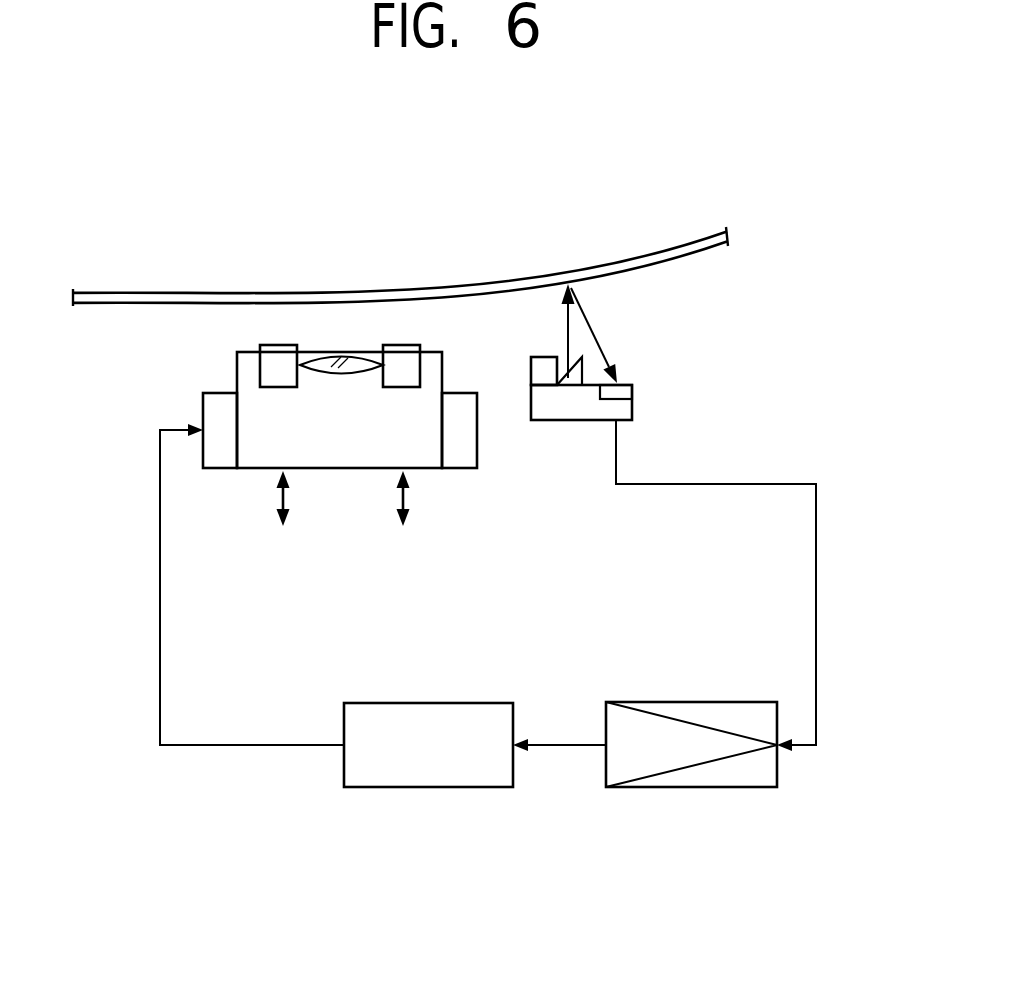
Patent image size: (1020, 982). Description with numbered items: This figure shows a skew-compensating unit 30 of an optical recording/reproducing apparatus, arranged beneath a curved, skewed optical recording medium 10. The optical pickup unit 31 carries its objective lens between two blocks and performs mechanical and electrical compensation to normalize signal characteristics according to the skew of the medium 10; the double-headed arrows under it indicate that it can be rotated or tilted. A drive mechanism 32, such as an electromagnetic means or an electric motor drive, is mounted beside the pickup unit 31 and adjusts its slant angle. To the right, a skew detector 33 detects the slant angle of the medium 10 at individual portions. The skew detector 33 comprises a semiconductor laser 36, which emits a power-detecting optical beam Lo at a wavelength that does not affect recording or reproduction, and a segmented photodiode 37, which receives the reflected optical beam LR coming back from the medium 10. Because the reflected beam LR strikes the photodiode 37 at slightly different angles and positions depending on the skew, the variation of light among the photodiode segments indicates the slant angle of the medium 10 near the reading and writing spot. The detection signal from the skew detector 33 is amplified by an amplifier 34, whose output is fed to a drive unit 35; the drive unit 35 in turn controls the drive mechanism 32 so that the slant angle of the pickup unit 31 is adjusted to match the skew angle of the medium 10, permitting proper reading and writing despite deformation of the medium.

The recording medium (optical disc) 10 is at (382, 295).
The optical pickup device 30 is at (897, 600).
The objective lens unit 31 is at (347, 445).
The lens actuator 32 is at (223, 438).
The tilt sensor 33 is at (645, 406).
The amplifier 34 is at (728, 787).
The drive unit 35 is at (450, 787).
The light emitting element 36 is at (540, 369).
The light receiving element 37 is at (633, 392).
The power-detecting optical beam Lo is at (567, 330).
The reflected optical beam LR is at (597, 338).